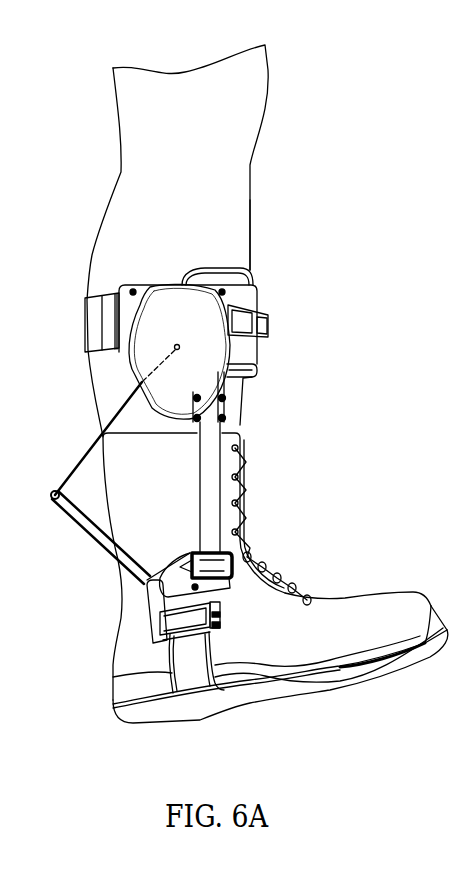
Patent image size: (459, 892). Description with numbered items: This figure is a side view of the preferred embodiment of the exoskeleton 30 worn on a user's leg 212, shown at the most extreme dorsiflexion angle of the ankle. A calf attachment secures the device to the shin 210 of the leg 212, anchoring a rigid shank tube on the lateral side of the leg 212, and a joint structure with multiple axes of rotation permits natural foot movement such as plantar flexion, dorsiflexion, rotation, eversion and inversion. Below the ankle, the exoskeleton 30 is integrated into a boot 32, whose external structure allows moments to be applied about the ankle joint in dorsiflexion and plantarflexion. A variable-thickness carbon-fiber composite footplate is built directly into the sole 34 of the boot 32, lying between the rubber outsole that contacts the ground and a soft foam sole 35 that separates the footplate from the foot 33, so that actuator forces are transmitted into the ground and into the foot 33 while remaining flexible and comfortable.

The leg 212 is at (252, 190).
The shin 210 is at (252, 240).
The exoskeleton 30 is at (250, 488).
The boot 32 is at (368, 688).
The foot 33 is at (388, 612).
The sole 34 is at (217, 702).
The soft foam sole 35 is at (170, 707).